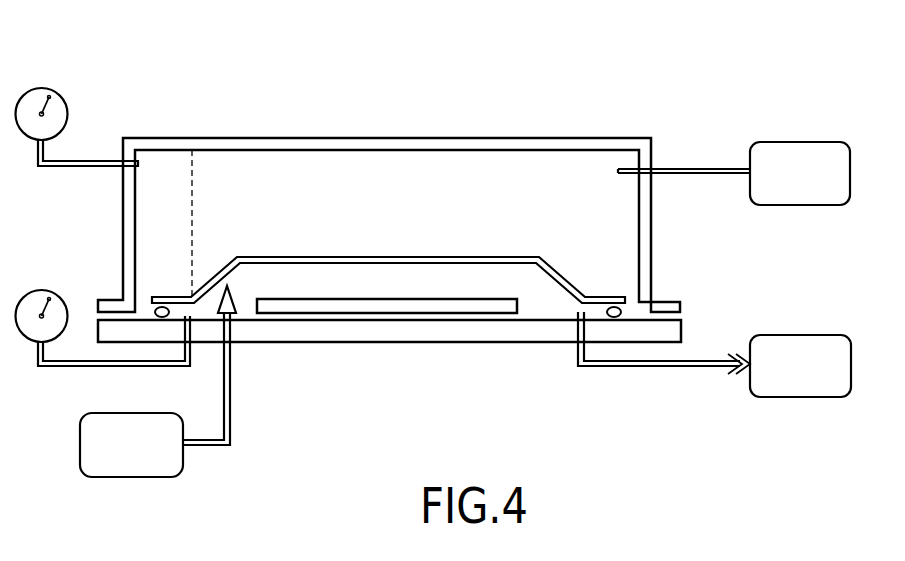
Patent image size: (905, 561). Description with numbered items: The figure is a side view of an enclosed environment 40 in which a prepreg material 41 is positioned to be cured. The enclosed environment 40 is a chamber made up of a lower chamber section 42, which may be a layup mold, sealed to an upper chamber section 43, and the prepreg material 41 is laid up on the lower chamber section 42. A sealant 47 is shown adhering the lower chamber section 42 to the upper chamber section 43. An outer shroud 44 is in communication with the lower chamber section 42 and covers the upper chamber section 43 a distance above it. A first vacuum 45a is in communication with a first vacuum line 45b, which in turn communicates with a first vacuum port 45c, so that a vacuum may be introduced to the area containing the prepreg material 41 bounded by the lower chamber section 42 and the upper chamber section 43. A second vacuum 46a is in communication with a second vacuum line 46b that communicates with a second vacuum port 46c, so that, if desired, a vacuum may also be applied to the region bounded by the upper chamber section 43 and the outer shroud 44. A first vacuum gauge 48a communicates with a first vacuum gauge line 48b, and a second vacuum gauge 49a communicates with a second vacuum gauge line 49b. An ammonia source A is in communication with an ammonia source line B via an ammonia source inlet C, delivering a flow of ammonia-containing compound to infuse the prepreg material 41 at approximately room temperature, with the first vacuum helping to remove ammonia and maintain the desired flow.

The enclosed environment 40 is at (378, 64).
The prepreg material 41 is at (352, 305).
The lower chamber section 42 is at (472, 343).
The upper chamber section 43 is at (295, 253).
The outer shroud 44 is at (300, 138).
The first vacuum 45a is at (770, 335).
The first vacuum line 45b is at (668, 368).
The first vacuum port 45c is at (578, 330).
The second vacuum 46a is at (770, 142).
The second vacuum line 46b is at (680, 168).
The second vacuum port 46c is at (630, 168).
The sealant 47 is at (165, 303).
The first vacuum gauge 48a is at (45, 291).
The first vacuum gauge line 48b is at (130, 366).
The second vacuum gauge 49a is at (66, 105).
The second vacuum gauge line 49b is at (60, 167).
The ammonia source A is at (183, 468).
The ammonia source line B is at (231, 437).
The ammonia source inlet C is at (231, 330).